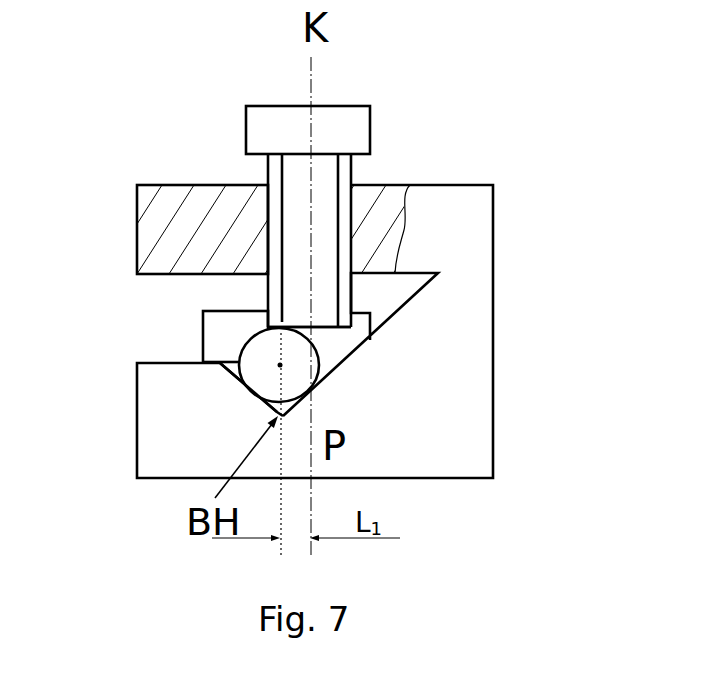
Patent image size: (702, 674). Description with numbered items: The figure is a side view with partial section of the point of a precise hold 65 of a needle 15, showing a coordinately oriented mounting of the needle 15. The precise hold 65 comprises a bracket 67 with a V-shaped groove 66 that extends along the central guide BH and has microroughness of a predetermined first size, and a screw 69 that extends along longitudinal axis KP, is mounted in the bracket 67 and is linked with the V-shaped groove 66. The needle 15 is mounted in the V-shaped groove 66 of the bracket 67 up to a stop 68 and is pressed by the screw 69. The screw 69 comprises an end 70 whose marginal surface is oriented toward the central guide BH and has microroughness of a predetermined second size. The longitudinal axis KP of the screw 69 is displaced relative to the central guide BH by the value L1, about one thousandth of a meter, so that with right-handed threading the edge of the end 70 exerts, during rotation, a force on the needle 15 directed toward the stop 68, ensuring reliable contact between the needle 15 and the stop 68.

The needle 15 is at (263, 371).
The precise hold 65 is at (496, 386).
The V-shaped groove 66 is at (258, 412).
The bracket 67 is at (451, 313).
The stop 68 is at (219, 337).
The screw 69 is at (272, 131).
The end 70 is at (276, 337).